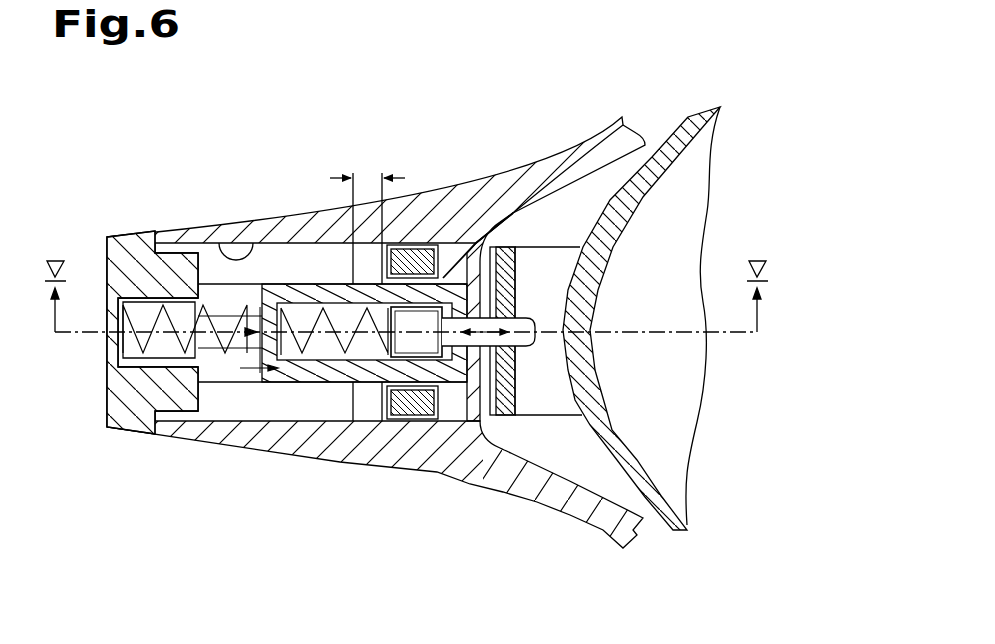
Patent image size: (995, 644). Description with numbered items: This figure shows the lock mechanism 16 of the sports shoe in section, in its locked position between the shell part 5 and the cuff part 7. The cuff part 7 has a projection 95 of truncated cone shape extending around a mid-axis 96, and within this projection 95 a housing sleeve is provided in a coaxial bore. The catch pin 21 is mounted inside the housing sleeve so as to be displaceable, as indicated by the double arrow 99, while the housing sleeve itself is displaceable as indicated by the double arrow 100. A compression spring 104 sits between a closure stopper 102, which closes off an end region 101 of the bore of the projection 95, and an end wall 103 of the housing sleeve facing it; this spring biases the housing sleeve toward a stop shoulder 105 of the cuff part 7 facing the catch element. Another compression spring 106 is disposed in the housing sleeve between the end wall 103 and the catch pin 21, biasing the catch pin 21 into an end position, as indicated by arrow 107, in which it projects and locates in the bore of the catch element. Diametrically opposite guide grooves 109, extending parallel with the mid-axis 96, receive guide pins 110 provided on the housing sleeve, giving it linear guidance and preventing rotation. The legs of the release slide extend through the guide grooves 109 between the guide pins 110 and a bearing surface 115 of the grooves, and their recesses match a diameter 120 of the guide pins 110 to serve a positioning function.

The shell part 5 is at (637, 475).
The cuff part 7 is at (548, 488).
The lock mechanism 16 is at (572, 214).
The catch pin 21 is at (540, 342).
The projection 95 is at (196, 170).
The mid-axis 96 is at (82, 336).
The double arrow 99 is at (517, 318).
The double arrow 100 is at (274, 365).
The end region 101 is at (406, 330).
The closure stopper 102 is at (133, 403).
The end wall 103 is at (300, 345).
The compression spring 104 is at (240, 345).
The stop shoulder 105 is at (263, 285).
The compression spring 106 is at (170, 432).
The arrow 107 is at (395, 358).
The guide grooves 109 is at (252, 240).
The guide pins 110 is at (392, 414).
The bearing surface 115 is at (428, 262).
The diameter 120 is at (370, 174).